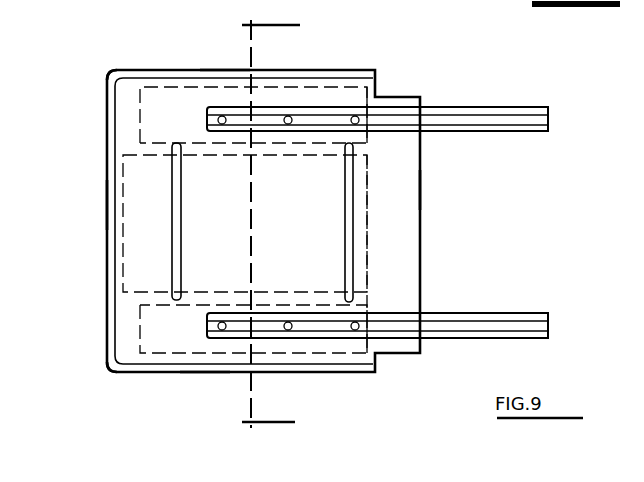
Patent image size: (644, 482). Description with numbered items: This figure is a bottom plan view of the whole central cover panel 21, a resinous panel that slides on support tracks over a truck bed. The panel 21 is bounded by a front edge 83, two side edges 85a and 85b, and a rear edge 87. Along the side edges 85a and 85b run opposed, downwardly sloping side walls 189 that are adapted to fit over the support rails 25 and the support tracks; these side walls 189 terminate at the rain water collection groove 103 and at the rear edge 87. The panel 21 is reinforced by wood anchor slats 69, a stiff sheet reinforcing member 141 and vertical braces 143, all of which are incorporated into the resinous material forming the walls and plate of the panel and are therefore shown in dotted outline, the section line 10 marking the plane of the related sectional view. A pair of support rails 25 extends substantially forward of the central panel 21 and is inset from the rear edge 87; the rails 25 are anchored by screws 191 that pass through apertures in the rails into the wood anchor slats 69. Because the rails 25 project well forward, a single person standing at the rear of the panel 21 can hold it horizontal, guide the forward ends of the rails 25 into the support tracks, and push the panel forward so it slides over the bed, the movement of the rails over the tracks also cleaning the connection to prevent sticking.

The section line 10 is at (271, 227).
The central cover panel 21 is at (106, 122).
The support rails 25 is at (493, 107).
The wood anchor slats 69 is at (348, 88).
The front edge 83 is at (422, 186).
The side edge 85a is at (200, 373).
The side edge 85b is at (223, 69).
The rear edge 87 is at (106, 204).
The rain water collection groove 103 is at (397, 162).
The stiff sheet reinforcing member 141 is at (367, 231).
The vertical braces 143 is at (182, 267).
The side walls 189 is at (138, 70).
The screws 191 is at (222, 116).